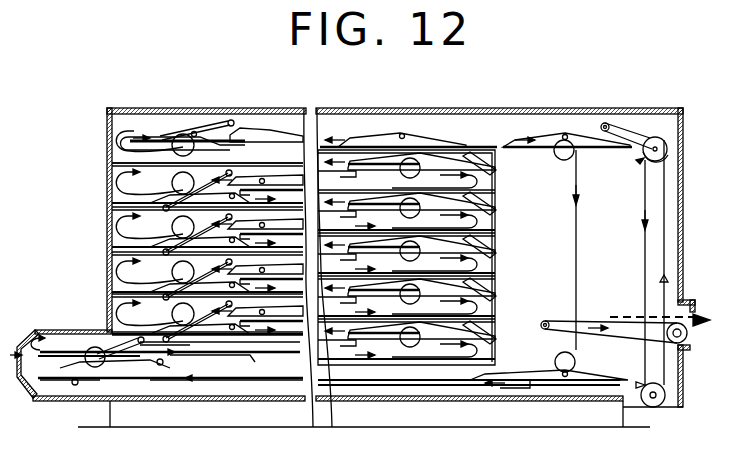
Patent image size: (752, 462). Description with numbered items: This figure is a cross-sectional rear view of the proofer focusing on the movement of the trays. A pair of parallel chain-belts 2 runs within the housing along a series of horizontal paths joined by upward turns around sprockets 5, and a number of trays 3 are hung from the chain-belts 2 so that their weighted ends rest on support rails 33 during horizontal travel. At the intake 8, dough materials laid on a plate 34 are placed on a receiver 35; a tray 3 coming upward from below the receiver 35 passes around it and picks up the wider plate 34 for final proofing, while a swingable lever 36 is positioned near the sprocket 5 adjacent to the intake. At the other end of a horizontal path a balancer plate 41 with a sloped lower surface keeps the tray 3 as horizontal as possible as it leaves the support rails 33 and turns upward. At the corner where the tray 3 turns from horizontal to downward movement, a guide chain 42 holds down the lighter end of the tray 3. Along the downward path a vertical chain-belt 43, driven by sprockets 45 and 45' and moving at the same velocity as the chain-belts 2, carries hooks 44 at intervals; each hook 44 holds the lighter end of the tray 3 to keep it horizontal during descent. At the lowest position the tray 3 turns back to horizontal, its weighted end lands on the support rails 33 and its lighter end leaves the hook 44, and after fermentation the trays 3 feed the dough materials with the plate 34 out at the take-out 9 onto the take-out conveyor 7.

The chain-belt 2 is at (208, 122).
The tray 3 is at (165, 131).
The sprocket 5 is at (122, 148).
The take-out conveyor 7 is at (622, 325).
The intake 8 is at (30, 342).
The take-out 9 is at (685, 313).
The support rail 33 is at (283, 140).
The plate 34 is at (70, 355).
The receiver 35 is at (60, 366).
The lever 36 is at (110, 347).
The balancer plate 41 is at (496, 160).
The guide chain 42 is at (626, 128).
The vertical chain-belt 43 is at (645, 192).
The hook 44 is at (655, 136).
The sprocket 45 is at (677, 145).
The sprocket 45' is at (667, 417).